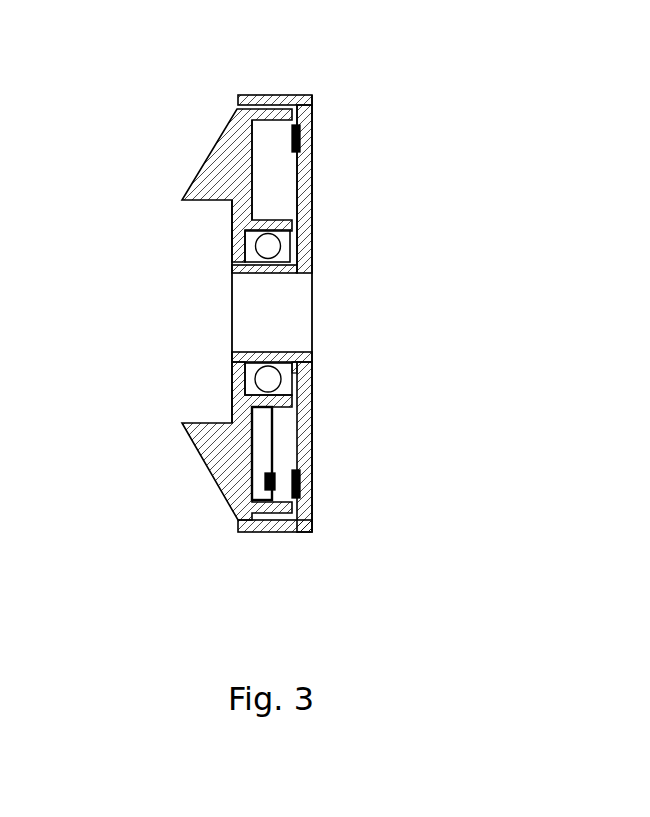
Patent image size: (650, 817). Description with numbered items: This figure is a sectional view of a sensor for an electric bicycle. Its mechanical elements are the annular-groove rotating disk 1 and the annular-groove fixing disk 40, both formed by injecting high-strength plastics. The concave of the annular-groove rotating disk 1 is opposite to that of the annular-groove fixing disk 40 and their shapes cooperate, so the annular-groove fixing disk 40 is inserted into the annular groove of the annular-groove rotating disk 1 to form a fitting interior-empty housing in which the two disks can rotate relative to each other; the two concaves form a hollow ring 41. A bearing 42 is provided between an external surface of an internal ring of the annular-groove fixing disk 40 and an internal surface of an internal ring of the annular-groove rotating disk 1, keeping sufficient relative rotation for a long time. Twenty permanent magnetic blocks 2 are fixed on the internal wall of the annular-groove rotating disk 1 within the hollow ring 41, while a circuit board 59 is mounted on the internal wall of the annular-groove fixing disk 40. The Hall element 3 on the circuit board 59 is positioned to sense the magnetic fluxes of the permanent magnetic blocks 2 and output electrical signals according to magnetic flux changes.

The annular-groove rotating disk 1 is at (312, 183).
The permanent magnetic blocks 2 is at (302, 131).
The Hall element 3 is at (239, 521).
The annular-groove fixing disk 40 is at (225, 158).
The hollow ring 41 is at (278, 157).
The bearing 42 is at (269, 246).
The circuit board 59 is at (263, 445).